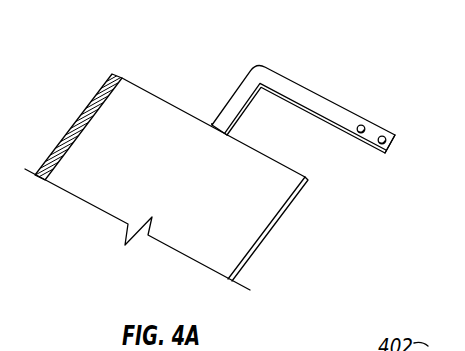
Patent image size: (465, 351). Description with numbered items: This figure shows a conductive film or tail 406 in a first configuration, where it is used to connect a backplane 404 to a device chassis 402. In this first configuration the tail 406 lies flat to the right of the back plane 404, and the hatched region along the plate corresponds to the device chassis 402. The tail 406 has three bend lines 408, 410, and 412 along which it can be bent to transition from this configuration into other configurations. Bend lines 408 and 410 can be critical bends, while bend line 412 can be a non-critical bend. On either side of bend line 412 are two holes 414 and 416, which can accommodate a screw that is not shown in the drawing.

The device chassis 402 is at (95, 107).
The backplane 404 is at (178, 198).
The tail 406 is at (242, 77).
The bend line 408 is at (212, 123).
The bend line 410 is at (266, 80).
The bend line 412 is at (372, 132).
The hole 414 is at (368, 143).
The hole 416 is at (401, 138).